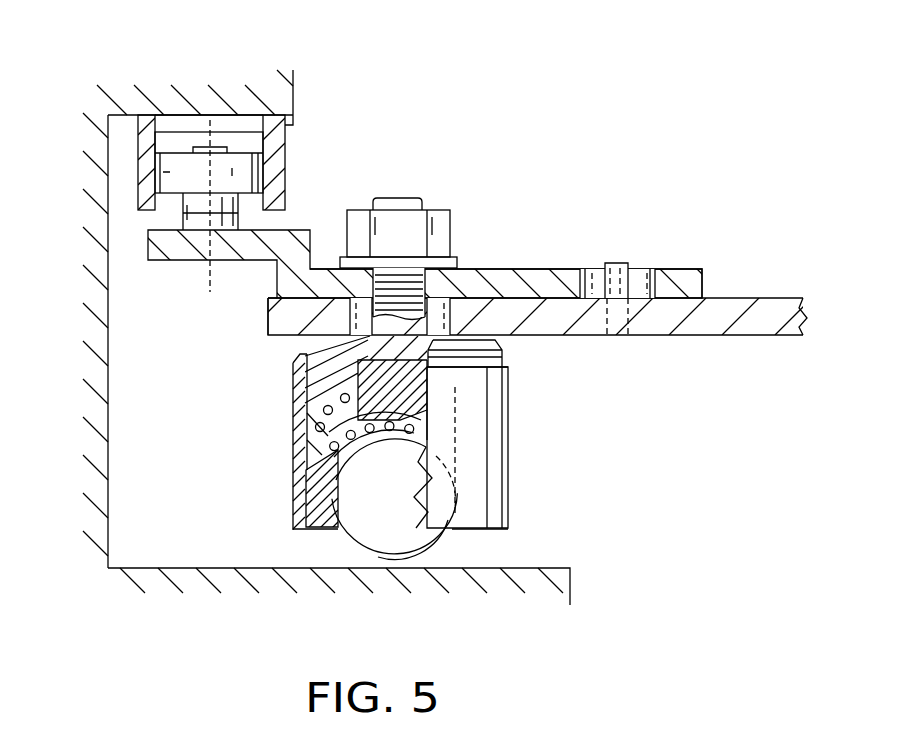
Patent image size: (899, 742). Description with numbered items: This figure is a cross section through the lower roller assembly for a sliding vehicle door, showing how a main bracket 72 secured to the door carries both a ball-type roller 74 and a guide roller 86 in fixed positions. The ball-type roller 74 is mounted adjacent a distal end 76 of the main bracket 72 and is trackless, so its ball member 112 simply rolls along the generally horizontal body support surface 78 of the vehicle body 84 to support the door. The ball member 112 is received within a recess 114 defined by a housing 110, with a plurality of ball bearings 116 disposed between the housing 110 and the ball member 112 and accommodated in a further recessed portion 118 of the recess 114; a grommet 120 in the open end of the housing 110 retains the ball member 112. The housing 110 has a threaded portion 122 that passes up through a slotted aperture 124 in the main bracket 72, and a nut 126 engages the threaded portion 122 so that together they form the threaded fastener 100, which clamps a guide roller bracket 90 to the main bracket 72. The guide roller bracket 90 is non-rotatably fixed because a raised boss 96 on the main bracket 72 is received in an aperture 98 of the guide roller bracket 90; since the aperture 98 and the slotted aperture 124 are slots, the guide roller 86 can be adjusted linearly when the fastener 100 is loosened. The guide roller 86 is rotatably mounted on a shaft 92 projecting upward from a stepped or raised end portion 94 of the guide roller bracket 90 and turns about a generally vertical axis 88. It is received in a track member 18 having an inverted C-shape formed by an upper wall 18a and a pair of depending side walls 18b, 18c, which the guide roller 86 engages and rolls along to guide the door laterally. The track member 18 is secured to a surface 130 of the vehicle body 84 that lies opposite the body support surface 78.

The track member 18 is at (188, 115).
The upper wall 18a is at (222, 123).
The side wall 18b is at (138, 160).
The side wall 18c is at (288, 138).
The main bracket 72 is at (742, 298).
The ball-type roller 74 is at (398, 484).
The distal end 76 is at (273, 320).
The body support surface 78 is at (489, 567).
The vehicle body 84 is at (97, 378).
The guide roller 86 is at (175, 173).
The vertical axis 88 is at (210, 277).
The guide roller bracket 90 is at (514, 268).
The shaft 92 is at (190, 213).
The end portion 94 is at (152, 249).
The raised boss 96 is at (615, 265).
The aperture 98 is at (638, 279).
The threaded fastener 100 is at (427, 212).
The housing 110 is at (509, 484).
The ball member 112 is at (384, 538).
The recess 114 is at (362, 510).
The ball bearings 116 is at (320, 443).
The further recessed portion 118 is at (300, 447).
The grommet 120 is at (340, 492).
The threaded portion 122 is at (400, 272).
The slotted aperture 124 is at (443, 317).
The nut 126 is at (398, 220).
The surface 130 is at (175, 114).